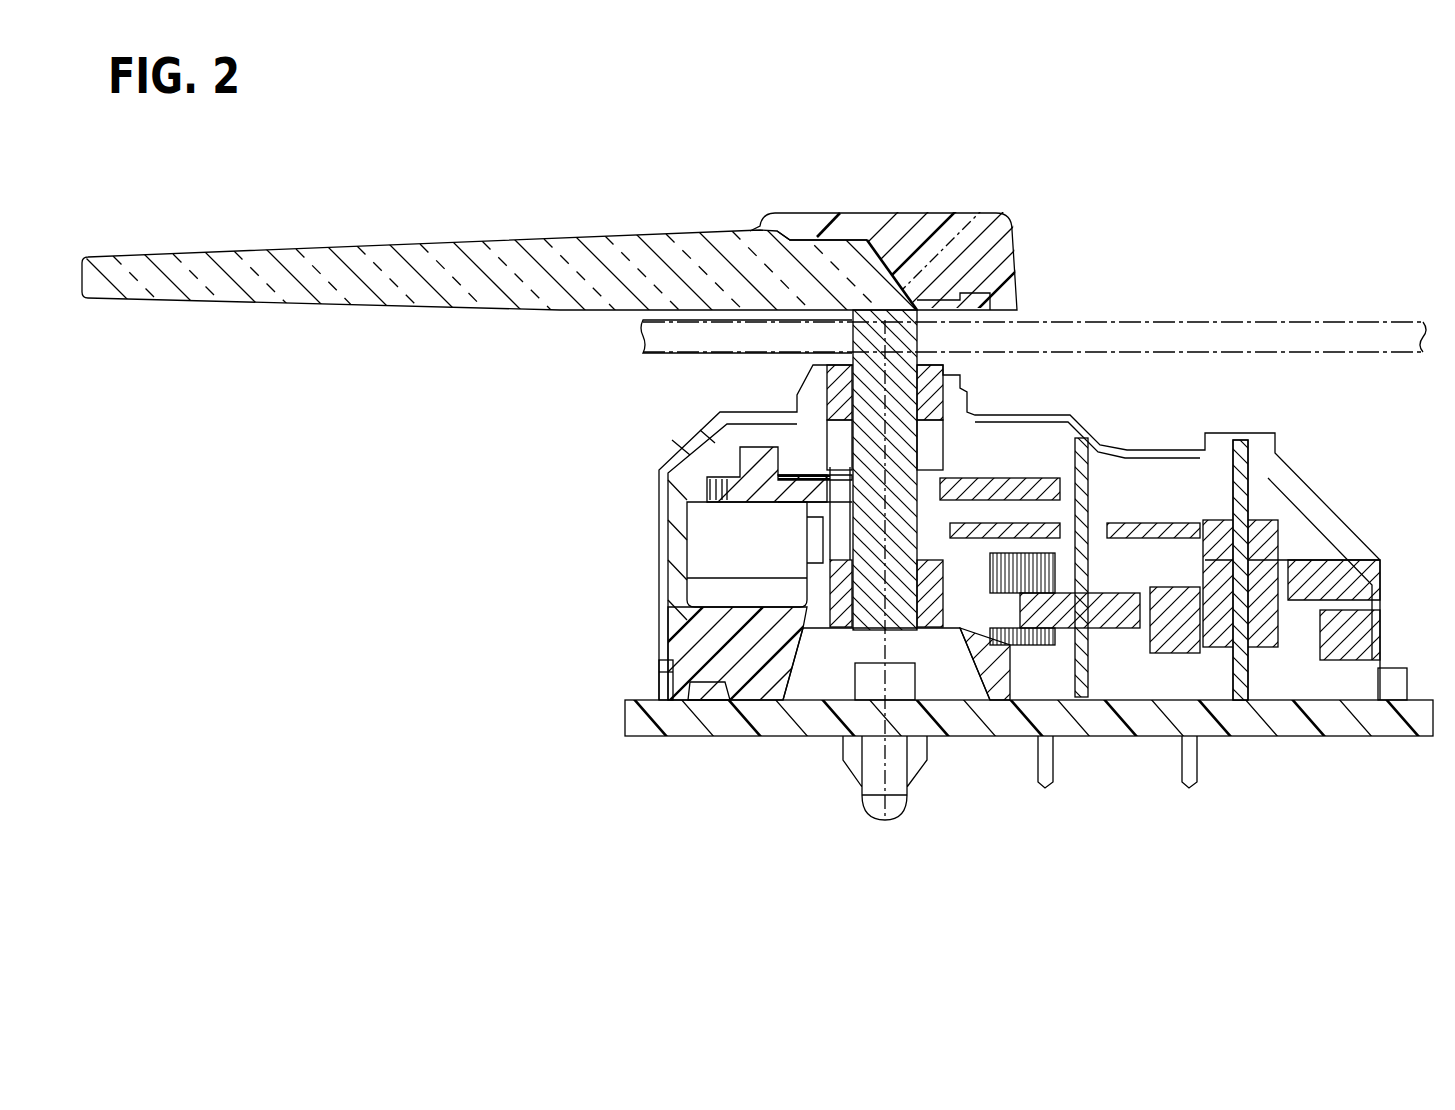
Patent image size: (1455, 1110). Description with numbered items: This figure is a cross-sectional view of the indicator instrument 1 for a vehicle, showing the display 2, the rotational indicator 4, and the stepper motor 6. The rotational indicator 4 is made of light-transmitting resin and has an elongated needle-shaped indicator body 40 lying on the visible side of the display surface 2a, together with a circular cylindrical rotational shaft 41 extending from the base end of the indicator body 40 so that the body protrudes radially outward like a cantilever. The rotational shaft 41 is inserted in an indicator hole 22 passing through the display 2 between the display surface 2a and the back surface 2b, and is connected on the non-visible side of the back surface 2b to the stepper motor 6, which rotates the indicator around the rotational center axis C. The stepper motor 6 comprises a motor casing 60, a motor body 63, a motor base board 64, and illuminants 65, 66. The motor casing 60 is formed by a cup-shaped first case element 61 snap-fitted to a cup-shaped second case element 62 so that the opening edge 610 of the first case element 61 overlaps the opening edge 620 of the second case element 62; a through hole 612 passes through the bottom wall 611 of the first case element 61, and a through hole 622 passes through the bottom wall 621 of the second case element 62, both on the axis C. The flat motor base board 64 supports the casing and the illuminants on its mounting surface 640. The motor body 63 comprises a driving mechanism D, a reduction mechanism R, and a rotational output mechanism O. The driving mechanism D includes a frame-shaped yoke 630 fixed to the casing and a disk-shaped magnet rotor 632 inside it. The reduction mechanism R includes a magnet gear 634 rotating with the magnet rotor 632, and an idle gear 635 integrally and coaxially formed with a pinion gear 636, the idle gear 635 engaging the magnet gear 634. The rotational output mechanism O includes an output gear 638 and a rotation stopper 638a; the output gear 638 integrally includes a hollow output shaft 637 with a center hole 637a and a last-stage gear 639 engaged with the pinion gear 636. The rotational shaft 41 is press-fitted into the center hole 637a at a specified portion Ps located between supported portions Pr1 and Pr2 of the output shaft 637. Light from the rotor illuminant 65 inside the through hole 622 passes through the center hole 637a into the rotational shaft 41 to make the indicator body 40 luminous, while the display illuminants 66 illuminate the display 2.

The indicator instrument 1 is at (1322, 283).
The display 2 is at (1040, 337).
The display surface 2a is at (1372, 322).
The back surface 2b is at (1372, 352).
The rotational indicator 4 is at (528, 351).
The indicator body 40 is at (676, 257).
The rotational shaft 41 is at (893, 330).
The indicator hole 22 is at (958, 240).
The stepper motor 6 is at (683, 443).
The motor casing 60 is at (1370, 610).
The first case element 61 is at (1372, 573).
The second case element 62 is at (1367, 635).
The motor body 63 is at (1160, 542).
The motor base board 64 is at (1428, 715).
The rotor illuminant 65 is at (867, 688).
The display illuminant 66 is at (1407, 685).
The opening edge 610 is at (800, 590).
The bottom wall 611 is at (920, 370).
The through hole 612 is at (925, 360).
The opening edge 620 is at (680, 568).
The bottom wall 621 is at (758, 672).
The through hole 622 is at (945, 640).
The yoke 630 is at (1350, 620).
The magnet rotor 632 is at (1315, 620).
The magnet gear 634 is at (1215, 600).
The idle gear 635 is at (1160, 540).
The pinion gear 636 is at (1055, 600).
The output shaft 637 is at (808, 512).
The center hole 637a is at (935, 335).
The output gear 638 is at (688, 495).
The rotation stopper 638a is at (745, 475).
The last-stage gear 639 is at (712, 487).
The mounting surface 640 is at (655, 700).
The rotational output mechanism O is at (1007, 460).
The reduction mechanism R is at (1127, 513).
The driving mechanism D is at (1280, 582).
The supported portion Pr1 is at (827, 390).
The specified portion Ps is at (850, 433).
The supported portion Pr2 is at (823, 583).
The rotational center axis C is at (885, 822).